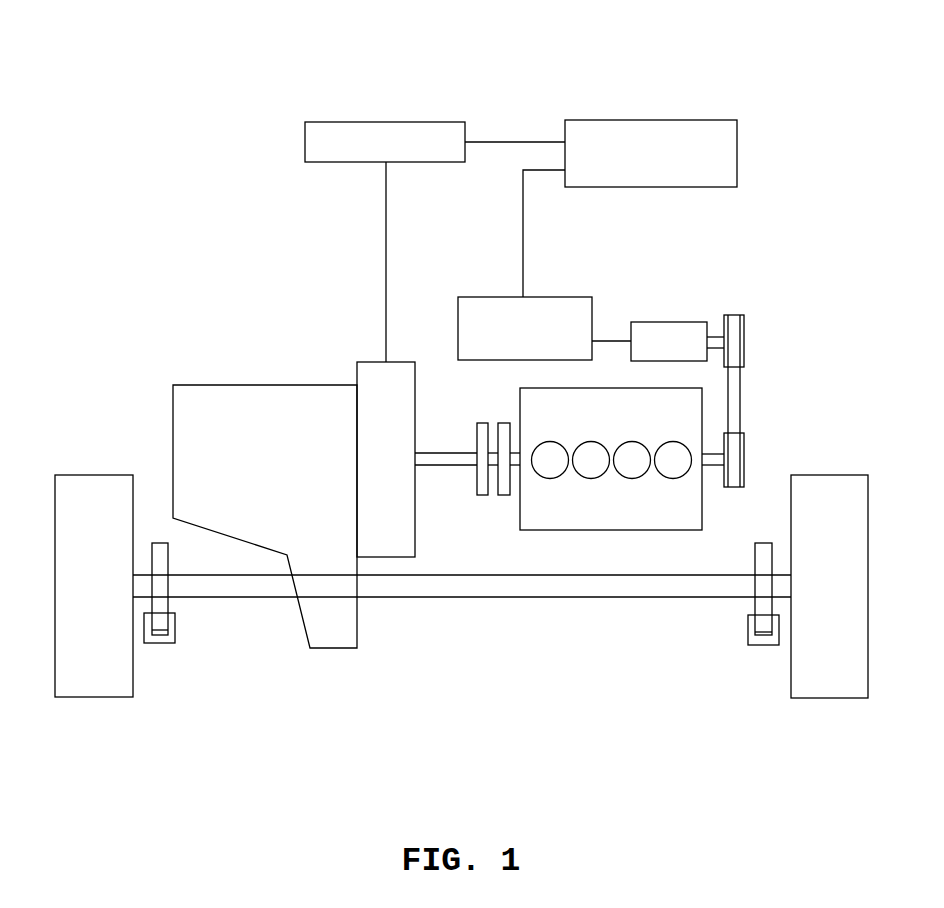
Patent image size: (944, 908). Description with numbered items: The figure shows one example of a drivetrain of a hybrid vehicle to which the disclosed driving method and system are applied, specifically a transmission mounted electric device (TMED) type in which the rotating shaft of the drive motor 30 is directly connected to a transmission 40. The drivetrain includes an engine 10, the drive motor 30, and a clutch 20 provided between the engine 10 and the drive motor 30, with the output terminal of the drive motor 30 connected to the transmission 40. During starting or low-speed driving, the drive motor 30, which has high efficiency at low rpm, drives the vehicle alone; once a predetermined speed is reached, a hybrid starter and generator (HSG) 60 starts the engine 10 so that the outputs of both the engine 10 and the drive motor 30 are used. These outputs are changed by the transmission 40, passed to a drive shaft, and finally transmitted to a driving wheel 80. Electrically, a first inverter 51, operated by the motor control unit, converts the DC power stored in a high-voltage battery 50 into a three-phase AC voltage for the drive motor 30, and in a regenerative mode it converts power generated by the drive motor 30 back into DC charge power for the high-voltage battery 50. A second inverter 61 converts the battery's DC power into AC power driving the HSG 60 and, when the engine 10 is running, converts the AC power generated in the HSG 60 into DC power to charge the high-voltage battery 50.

The engine 10 is at (695, 406).
The clutch 20 is at (485, 497).
The drive motor 30 is at (358, 362).
The transmission 40 is at (327, 648).
The high-voltage battery 50 is at (660, 120).
The first inverter 51 is at (400, 122).
The hybrid starter & generator (HSG) 60 is at (678, 322).
The second inverter 61 is at (561, 297).
The driving wheel 80 is at (92, 475).